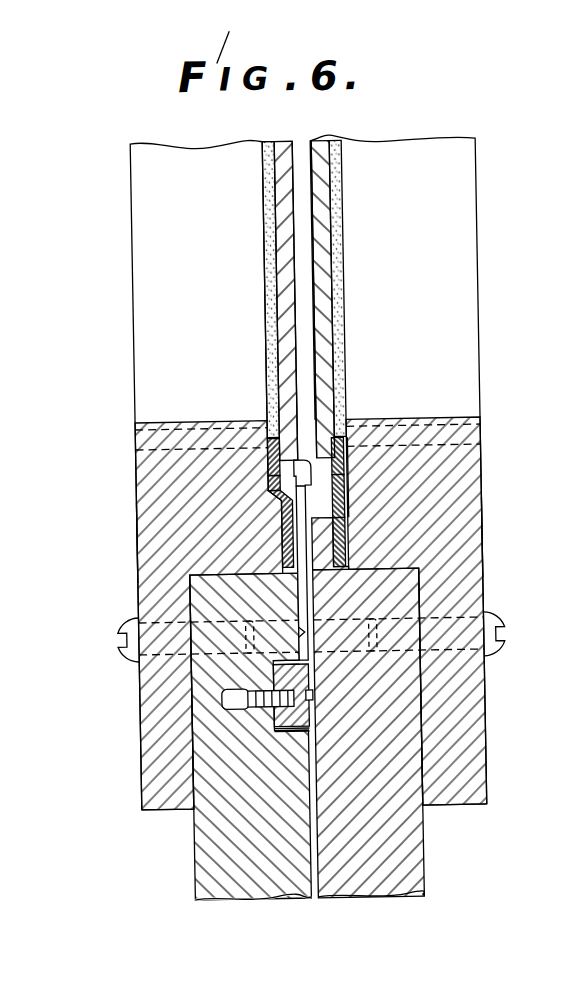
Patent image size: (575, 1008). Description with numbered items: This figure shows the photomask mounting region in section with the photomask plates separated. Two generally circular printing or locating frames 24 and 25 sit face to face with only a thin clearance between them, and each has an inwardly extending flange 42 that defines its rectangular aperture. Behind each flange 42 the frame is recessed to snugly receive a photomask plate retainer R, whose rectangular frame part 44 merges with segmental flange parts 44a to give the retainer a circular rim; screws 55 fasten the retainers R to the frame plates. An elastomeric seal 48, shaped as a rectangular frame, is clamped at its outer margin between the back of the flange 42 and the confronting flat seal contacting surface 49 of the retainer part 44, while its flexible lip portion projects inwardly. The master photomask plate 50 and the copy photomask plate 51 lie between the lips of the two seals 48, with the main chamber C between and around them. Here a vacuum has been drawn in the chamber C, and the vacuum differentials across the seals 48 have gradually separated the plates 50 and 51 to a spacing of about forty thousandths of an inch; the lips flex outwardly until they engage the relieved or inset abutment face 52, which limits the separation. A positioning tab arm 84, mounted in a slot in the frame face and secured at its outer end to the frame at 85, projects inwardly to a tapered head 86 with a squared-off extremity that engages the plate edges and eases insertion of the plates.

The printing or locating frame 24 is at (201, 853).
The printing or locating frame 25 is at (413, 859).
The inwardly extending flange 42 is at (338, 553).
The rectangular frame part of retainer 44 is at (153, 472).
The segmental flange part 44a is at (152, 738).
The elastomeric seal 48 is at (275, 496).
The seal contacting surface 49 is at (283, 541).
The master photomask plate 50 is at (287, 234).
The copy photomask plate 51 is at (325, 300).
The relieved or inset face 52 is at (270, 452).
The screw 55 is at (124, 653).
The positioning tab arm 84 is at (296, 591).
The tab arm securing point 85 is at (263, 711).
The head 86 is at (293, 470).
The main chamber C is at (306, 258).
The photomask plate retainer R is at (134, 536).